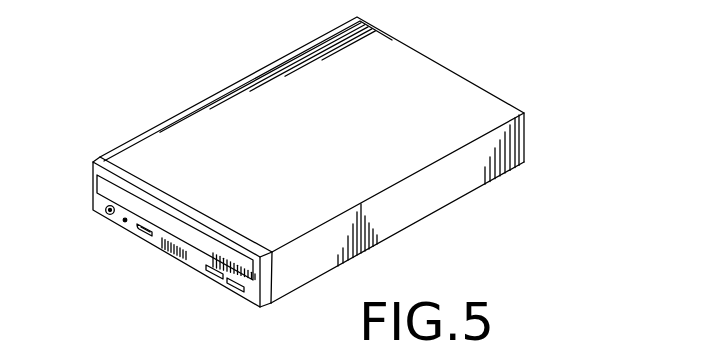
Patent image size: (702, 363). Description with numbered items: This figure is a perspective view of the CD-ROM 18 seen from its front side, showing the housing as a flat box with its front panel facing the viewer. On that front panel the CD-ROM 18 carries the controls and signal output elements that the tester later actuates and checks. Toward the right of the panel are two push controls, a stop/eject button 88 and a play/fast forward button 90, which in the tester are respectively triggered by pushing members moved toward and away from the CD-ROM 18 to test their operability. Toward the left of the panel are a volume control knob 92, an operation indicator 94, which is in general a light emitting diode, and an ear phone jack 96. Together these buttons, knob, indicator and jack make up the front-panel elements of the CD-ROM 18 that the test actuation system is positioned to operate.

The CD-ROM 18 is at (233, 92).
The stop/eject button 88 is at (233, 289).
The play/fast forward button 90 is at (206, 271).
The volume control knob 92 is at (140, 231).
The operation indicator 94 is at (123, 223).
The ear phone jack 96 is at (104, 213).